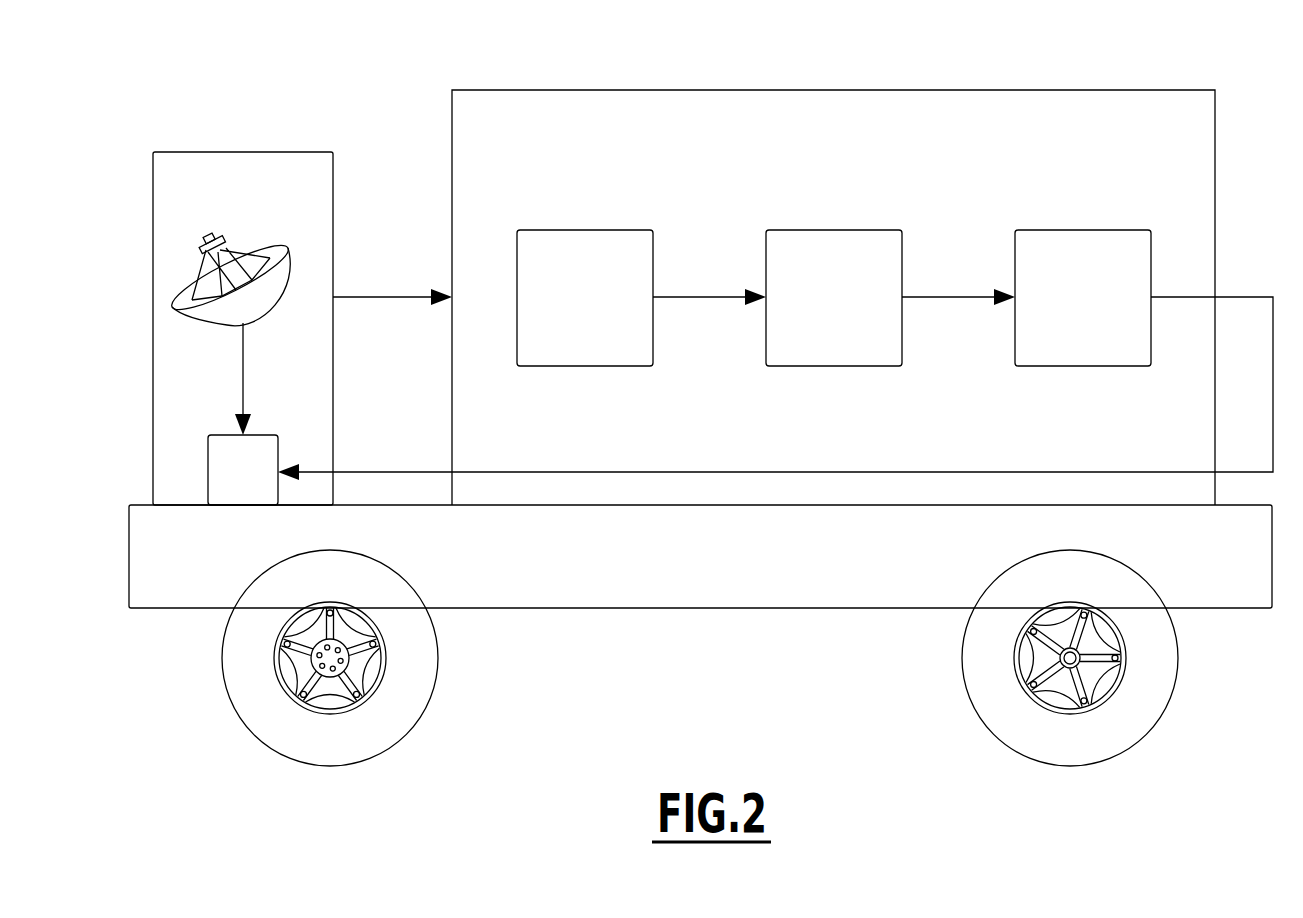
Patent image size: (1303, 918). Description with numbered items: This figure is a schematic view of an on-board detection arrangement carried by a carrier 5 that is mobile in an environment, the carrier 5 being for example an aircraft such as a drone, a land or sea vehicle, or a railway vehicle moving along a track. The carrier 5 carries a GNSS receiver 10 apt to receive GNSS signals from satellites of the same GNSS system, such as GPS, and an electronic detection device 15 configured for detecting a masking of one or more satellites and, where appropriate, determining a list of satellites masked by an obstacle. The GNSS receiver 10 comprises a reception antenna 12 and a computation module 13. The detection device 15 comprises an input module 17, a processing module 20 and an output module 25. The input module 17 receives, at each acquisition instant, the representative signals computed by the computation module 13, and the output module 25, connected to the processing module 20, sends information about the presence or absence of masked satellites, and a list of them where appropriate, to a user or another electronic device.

The carrier 5 is at (622, 608).
The GNSS receiver 10 is at (230, 152).
The reception antenna 12 is at (263, 238).
The computation module 13 is at (229, 489).
The electronic detection device 15 is at (615, 90).
The input module 17 is at (571, 316).
The processing module 20 is at (820, 316).
The output module 25 is at (1069, 316).